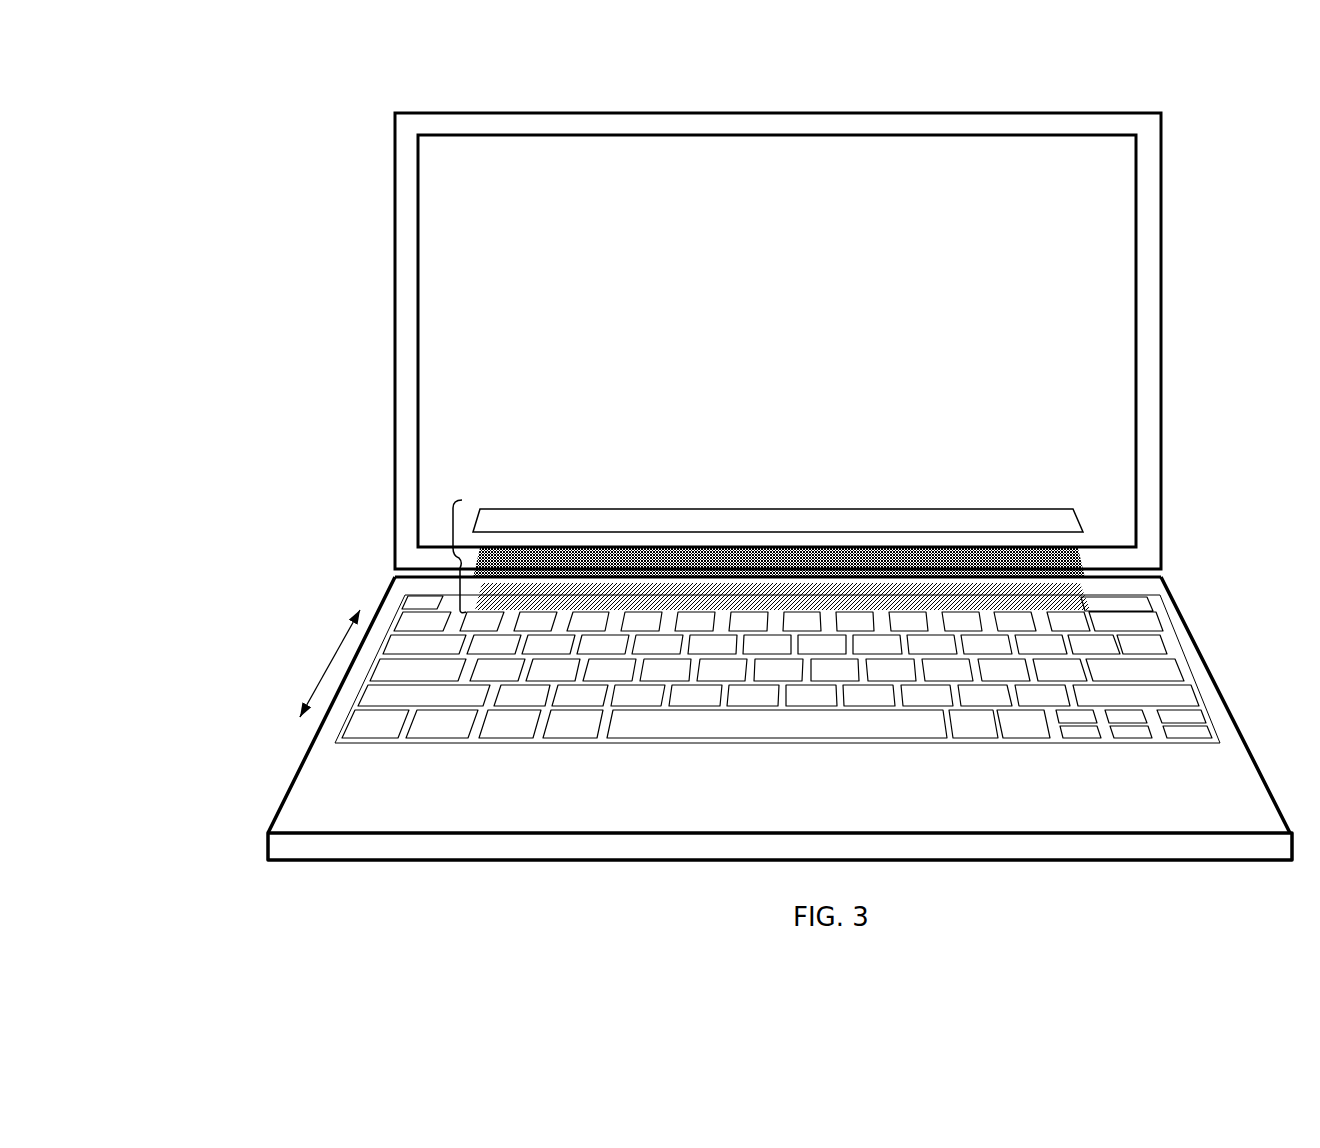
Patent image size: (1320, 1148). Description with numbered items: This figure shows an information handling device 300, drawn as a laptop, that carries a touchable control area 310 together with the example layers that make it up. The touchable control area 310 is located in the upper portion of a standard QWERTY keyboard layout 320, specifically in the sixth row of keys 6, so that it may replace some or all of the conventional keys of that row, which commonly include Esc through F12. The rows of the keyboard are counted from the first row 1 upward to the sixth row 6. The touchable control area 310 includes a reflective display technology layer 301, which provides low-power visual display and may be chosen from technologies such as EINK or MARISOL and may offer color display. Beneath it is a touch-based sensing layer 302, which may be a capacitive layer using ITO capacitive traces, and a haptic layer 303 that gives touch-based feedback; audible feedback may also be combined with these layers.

The information handling device 300 is at (347, 265).
The reflective display technology layer 301 is at (1052, 517).
The touch-based sensing layer 302 is at (1052, 558).
The haptic layer 303 is at (1052, 597).
The touchable control area 310 is at (442, 555).
The standard QWERTY keyboard layout 320 is at (1157, 653).
The sixth row of keys 6 is at (336, 649).
The direction indicator 1 is at (293, 725).